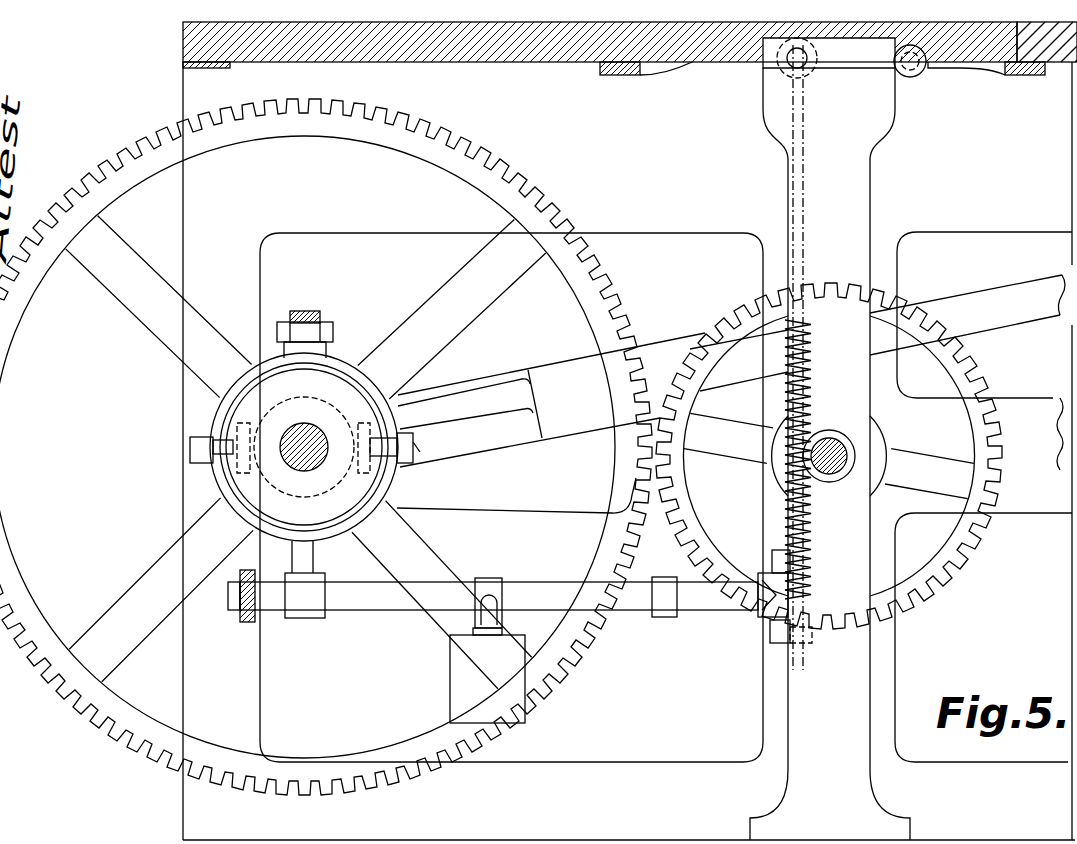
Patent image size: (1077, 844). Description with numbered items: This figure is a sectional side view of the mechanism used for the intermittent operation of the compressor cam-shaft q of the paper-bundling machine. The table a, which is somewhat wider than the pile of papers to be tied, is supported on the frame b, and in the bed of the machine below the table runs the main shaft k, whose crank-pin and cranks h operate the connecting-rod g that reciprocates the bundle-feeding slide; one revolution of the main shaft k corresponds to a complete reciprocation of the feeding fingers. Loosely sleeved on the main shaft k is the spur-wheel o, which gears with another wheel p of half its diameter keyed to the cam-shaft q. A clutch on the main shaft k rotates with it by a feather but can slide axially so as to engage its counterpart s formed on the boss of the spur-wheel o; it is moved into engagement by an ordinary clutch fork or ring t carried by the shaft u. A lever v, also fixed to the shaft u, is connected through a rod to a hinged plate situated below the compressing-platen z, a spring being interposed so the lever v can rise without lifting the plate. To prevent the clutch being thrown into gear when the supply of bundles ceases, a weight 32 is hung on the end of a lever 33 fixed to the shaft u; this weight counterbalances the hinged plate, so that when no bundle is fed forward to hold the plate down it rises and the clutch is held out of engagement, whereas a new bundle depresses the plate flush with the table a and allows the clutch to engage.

The table a is at (518, 62).
The frame b is at (629, 442).
The spur-wheel o is at (8, 575).
The main shaft k is at (328, 453).
The clutch fork or ring t is at (372, 374).
The clutch counterpart s is at (312, 318).
The cranks h is at (480, 442).
The connecting-rod g is at (1037, 318).
The wheel p is at (968, 558).
The cam-shaft q is at (848, 458).
The compressing-platen z is at (797, 535).
The shaft u is at (390, 603).
The lever v is at (680, 612).
The lever 33 is at (470, 598).
The weight 32 is at (487, 675).